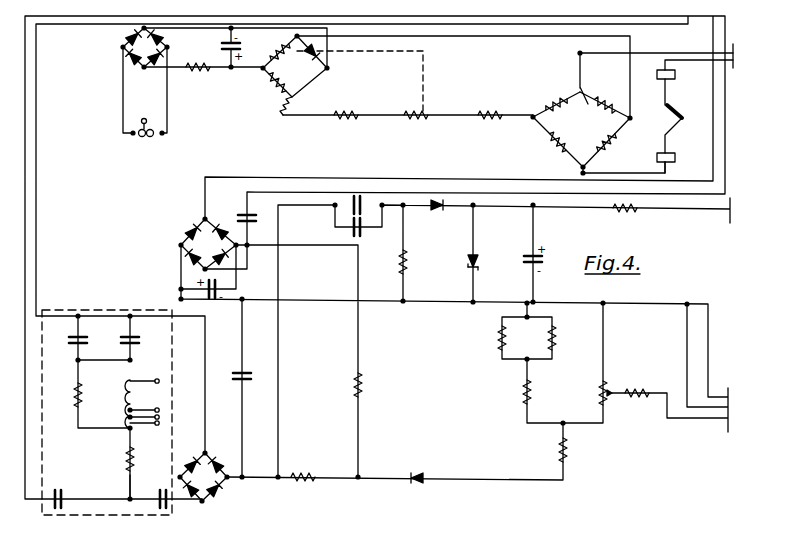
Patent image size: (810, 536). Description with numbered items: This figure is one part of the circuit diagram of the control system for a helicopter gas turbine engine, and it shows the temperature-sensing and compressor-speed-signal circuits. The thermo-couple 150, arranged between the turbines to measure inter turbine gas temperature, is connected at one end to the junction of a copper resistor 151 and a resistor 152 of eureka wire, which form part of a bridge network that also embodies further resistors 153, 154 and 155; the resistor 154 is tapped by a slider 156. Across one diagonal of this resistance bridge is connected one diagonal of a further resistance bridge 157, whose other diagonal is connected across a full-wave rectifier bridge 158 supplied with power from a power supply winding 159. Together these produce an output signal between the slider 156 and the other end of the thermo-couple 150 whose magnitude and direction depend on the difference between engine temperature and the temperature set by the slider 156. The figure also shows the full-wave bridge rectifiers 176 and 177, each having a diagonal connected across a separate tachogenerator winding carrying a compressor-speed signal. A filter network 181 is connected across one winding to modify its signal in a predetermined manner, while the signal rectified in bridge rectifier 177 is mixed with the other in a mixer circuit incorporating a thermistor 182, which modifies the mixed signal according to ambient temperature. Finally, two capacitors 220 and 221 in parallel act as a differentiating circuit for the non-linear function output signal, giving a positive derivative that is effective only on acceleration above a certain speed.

The thermo-couple 150 is at (680, 116).
The copper resistor 151 is at (607, 147).
The resistor of eureka wire 152 is at (555, 147).
The resistor 153 is at (617, 98).
The resistor 154 is at (577, 118).
The resistor 155 is at (546, 106).
The slider 156 is at (578, 90).
The further resistance bridge 157 is at (310, 80).
The full-wave rectifier bridge 158 is at (140, 70).
The power supply winding 159 is at (155, 138).
The full-wave bridge rectifier 176 is at (225, 484).
The full-wave bridge rectifier 177 is at (181, 245).
The filter network 181 is at (128, 308).
The thermistor 182 is at (548, 340).
The capacitor 220 is at (365, 197).
The capacitor 221 is at (363, 236).